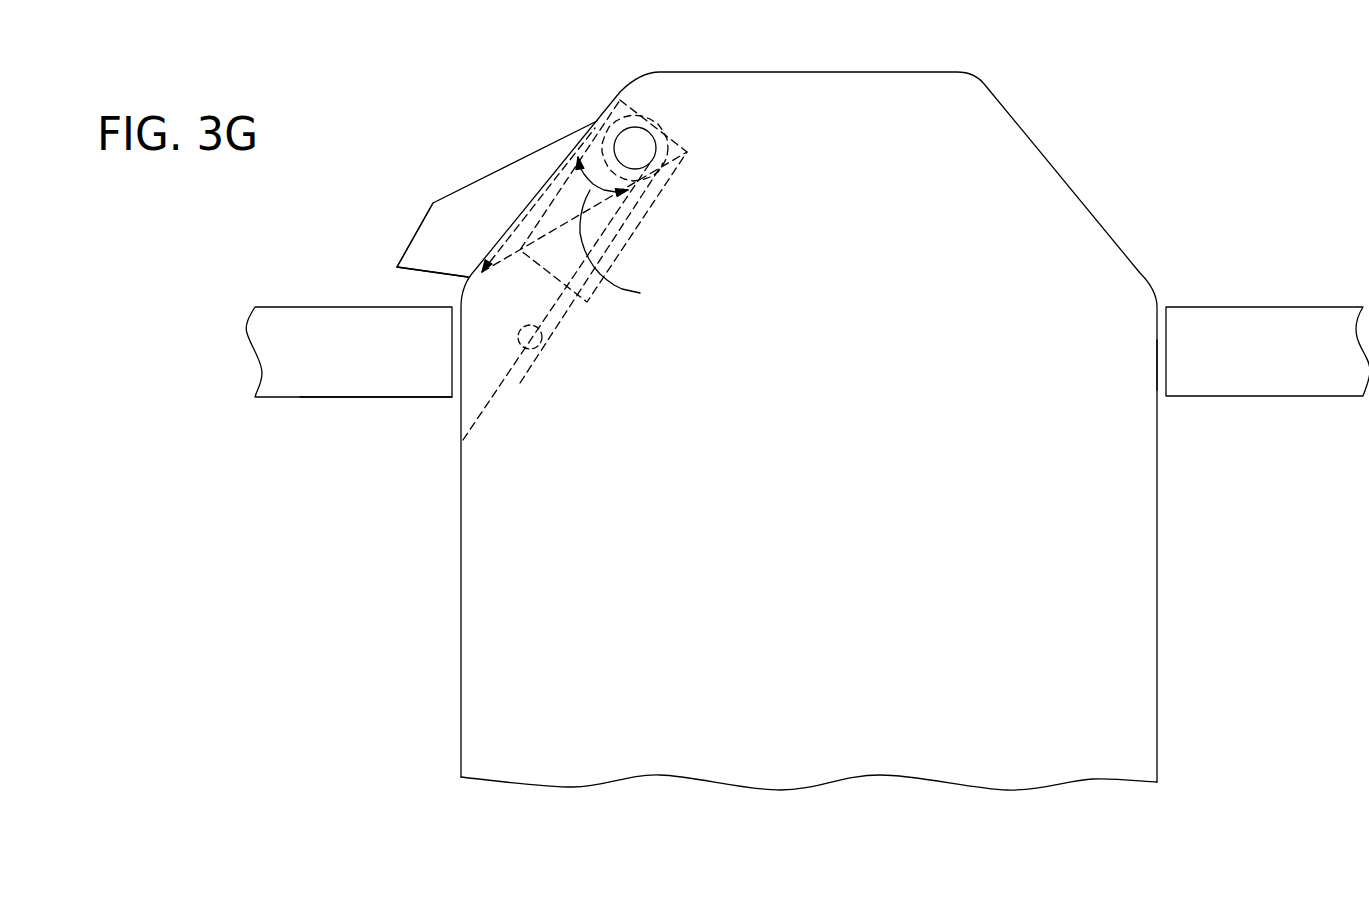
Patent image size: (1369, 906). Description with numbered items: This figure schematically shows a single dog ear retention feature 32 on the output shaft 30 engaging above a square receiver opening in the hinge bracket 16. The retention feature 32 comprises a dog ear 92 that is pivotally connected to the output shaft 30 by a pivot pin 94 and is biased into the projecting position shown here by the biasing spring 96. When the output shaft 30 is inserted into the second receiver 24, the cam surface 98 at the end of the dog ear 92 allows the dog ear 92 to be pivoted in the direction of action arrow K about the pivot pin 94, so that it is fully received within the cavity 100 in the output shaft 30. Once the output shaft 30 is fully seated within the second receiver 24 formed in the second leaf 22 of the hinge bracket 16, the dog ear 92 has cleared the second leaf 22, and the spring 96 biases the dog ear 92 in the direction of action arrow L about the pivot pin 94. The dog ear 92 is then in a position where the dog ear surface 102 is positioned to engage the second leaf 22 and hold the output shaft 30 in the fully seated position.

The output shaft 30 is at (993, 132).
The second leaf 22 is at (288, 327).
The hinge bracket 16 is at (347, 387).
The second receiver 24 is at (1165, 363).
The retention feature 32 is at (497, 108).
The dog ear 92 is at (503, 187).
The pivot pin 94 is at (643, 143).
The biasing spring 96 is at (633, 223).
The cam surface 98 is at (417, 227).
The cavity 100 is at (530, 360).
The dog ear surface 102 is at (428, 273).
The action arrow K is at (597, 148).
The action arrow L is at (620, 251).